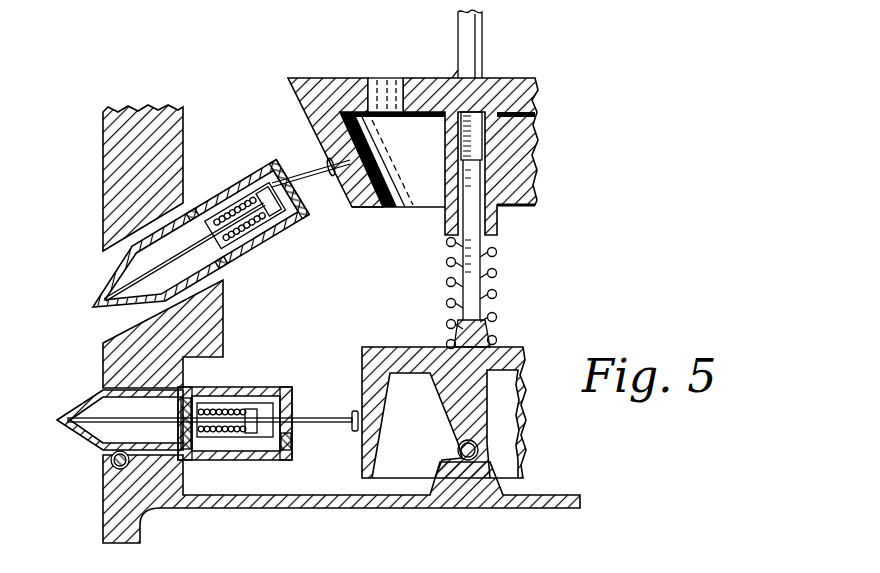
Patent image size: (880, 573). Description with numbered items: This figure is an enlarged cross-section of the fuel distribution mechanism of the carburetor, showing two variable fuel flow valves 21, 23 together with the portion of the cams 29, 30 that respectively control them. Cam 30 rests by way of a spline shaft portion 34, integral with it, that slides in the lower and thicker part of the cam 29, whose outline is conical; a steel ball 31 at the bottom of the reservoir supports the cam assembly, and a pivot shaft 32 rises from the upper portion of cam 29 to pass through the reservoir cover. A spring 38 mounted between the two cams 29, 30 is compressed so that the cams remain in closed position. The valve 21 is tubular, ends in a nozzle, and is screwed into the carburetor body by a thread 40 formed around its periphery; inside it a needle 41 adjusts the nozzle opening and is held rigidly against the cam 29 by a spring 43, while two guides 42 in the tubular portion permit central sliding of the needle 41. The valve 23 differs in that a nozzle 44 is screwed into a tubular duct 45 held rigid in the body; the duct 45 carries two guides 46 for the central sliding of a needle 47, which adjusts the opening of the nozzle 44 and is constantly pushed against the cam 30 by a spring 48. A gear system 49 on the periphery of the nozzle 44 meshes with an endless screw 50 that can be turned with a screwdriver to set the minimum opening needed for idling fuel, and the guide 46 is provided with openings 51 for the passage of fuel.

The variable fuel flow valve 21 is at (187, 190).
The variable fuel flow valve 23 is at (210, 459).
The cam 29 is at (330, 78).
The cam 30 is at (385, 347).
The steel ball 31 is at (463, 461).
The pivot shaft 32 is at (473, 43).
The spline shaft portion 34 is at (470, 262).
The spring 38 is at (493, 297).
The thread 40 is at (207, 196).
The needle 41 is at (302, 182).
The guides 42 is at (307, 202).
The spring 43 is at (268, 238).
The nozzle 44 is at (84, 400).
The tubular duct 45 is at (253, 397).
The guides 46 is at (197, 387).
The needle 47 is at (329, 414).
The spring 48 is at (210, 417).
The gear system 49 is at (105, 450).
The endless screw 50 is at (113, 472).
The openings 51 is at (288, 438).